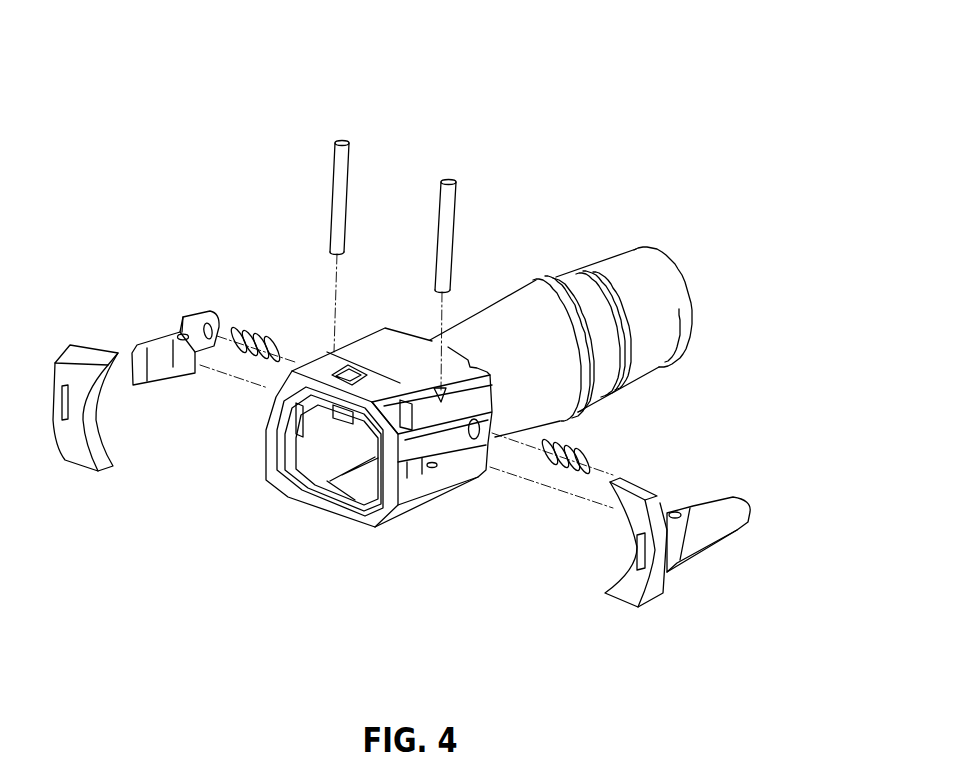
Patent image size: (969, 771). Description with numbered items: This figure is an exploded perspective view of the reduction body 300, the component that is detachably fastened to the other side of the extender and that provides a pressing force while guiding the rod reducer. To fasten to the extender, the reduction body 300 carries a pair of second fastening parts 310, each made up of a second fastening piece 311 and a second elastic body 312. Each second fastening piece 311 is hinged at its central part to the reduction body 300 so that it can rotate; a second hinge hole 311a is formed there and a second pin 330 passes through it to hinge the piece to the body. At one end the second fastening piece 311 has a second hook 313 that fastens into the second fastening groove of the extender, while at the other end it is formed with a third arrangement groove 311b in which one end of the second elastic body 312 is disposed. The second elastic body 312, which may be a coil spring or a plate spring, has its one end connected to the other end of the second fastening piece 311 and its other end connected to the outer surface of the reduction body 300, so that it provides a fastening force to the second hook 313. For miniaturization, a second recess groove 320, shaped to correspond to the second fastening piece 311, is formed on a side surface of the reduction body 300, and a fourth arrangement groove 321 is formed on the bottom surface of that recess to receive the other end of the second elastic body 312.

The reduction body 300 is at (360, 42).
The second fastening part 310 is at (165, 402).
The second fastening piece 311 is at (157, 340).
The second hinge hole 311a is at (185, 328).
The third arrangement groove 311b is at (230, 328).
The second elastic body 312 is at (258, 337).
The second hook 313 is at (85, 343).
The second recess groove 320 is at (428, 478).
The fourth arrangement groove 321 is at (478, 440).
The second pin 330 is at (333, 187).